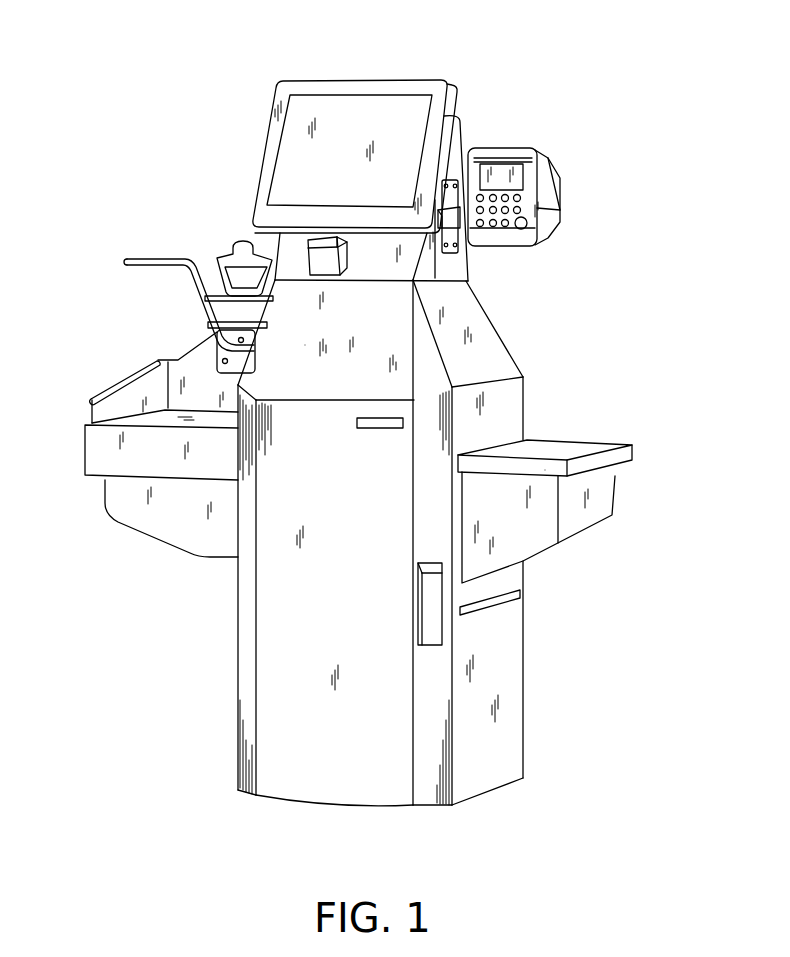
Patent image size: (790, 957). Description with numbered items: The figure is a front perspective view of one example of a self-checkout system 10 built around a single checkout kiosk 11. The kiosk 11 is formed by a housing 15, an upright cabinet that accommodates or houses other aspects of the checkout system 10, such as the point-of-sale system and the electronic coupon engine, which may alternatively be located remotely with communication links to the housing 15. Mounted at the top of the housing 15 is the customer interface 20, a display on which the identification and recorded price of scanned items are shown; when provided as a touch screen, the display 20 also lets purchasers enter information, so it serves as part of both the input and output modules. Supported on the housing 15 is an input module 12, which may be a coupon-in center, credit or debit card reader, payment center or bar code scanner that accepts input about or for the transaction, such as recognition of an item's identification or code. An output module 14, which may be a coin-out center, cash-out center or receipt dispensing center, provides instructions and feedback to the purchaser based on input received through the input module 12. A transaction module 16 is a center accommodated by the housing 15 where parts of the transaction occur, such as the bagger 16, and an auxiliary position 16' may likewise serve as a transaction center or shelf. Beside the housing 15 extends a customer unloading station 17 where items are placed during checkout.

The checkout system 10 is at (470, 68).
The checkout kiosk 11 is at (245, 655).
The input module 12 is at (340, 259).
The output module 14 is at (390, 422).
The housing 15 is at (503, 633).
The transaction module 16 is at (522, 194).
The card reader on shelf 16' is at (169, 399).
The customer unloading station 17 is at (584, 454).
The customer interface 20 is at (312, 175).